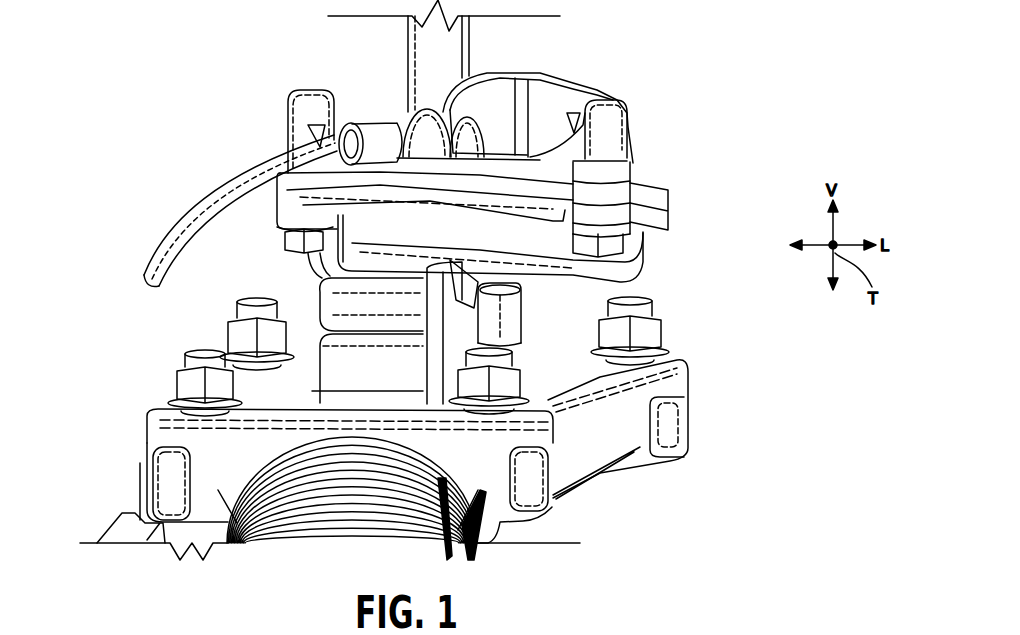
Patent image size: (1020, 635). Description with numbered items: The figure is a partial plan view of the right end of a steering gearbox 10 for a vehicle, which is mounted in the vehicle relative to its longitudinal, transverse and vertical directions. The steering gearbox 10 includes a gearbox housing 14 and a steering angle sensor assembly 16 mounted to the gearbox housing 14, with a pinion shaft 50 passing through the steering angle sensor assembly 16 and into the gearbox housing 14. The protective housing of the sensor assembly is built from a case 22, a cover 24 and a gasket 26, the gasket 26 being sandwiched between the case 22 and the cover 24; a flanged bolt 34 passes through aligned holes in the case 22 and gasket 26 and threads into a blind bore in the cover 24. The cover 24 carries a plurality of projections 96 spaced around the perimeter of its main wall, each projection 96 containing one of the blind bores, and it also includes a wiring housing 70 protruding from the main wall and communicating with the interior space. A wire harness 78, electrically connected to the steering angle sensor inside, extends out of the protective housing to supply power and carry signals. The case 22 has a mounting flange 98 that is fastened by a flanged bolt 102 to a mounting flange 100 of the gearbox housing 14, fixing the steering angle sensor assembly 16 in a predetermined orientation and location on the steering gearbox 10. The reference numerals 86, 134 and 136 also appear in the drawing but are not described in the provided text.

The steering gearbox 10 is at (180, 131).
The gearbox housing 14 is at (686, 421).
The steering angle sensor assembly 16 is at (640, 103).
The case 22 is at (668, 230).
The cover 24 is at (660, 183).
The gasket 26 is at (668, 207).
The flanged bolt 34 is at (280, 250).
The pinion shaft 50 is at (463, 60).
The wiring housing 70 is at (583, 83).
The wire harness 78 is at (166, 250).
The tube 86 is at (388, 115).
The projections 96 is at (300, 95).
The mounting flange 98 is at (327, 308).
The mounting flange 100 is at (428, 345).
The flanged bolt 102 is at (503, 313).
The strut member 134 is at (523, 520).
The slot 136 is at (684, 446).